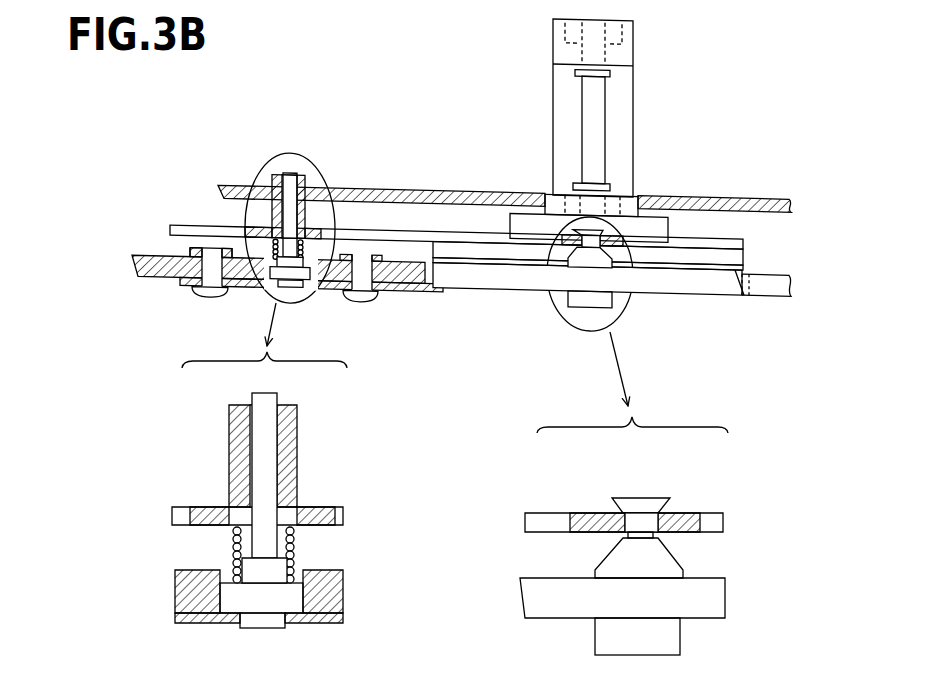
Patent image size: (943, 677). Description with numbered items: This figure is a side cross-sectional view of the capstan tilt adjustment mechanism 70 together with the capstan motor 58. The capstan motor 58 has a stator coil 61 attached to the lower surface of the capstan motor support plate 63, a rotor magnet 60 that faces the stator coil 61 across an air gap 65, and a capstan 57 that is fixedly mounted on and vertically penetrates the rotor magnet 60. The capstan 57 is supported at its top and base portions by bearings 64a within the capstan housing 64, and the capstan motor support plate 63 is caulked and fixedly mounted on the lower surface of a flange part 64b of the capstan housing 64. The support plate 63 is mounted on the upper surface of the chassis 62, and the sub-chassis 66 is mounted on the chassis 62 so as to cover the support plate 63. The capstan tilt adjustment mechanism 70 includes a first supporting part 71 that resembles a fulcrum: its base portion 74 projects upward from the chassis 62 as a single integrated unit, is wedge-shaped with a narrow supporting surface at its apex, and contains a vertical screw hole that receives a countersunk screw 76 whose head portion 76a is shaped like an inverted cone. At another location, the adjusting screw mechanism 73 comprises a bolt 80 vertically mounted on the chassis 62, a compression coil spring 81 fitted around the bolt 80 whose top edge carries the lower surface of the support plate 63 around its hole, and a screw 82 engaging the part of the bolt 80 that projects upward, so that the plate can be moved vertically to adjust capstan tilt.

The capstan 57 is at (604, 118).
The capstan motor 58 is at (646, 249).
The rotor magnet 60 is at (749, 268).
The stator coil 61 is at (749, 253).
The chassis 62 is at (687, 294).
The capstan motor support plate 63 is at (409, 237).
The capstan housing 64 is at (552, 106).
The bearings 64a is at (545, 34).
The flange part 64b is at (671, 230).
The air gap 65 is at (740, 274).
The sub-chassis 66 is at (749, 197).
The capstan tilt adjustment mechanism 70 is at (595, 129).
The first supporting part 71 is at (624, 301).
The adjusting screw mechanism 73 is at (267, 168).
The base portion of the fulcrum 74 is at (657, 558).
The countersunk screw 76 is at (630, 498).
The head portion 76a is at (664, 500).
The bolt 80 is at (262, 453).
The compression coil spring 81 is at (230, 545).
The screw 82 is at (298, 413).